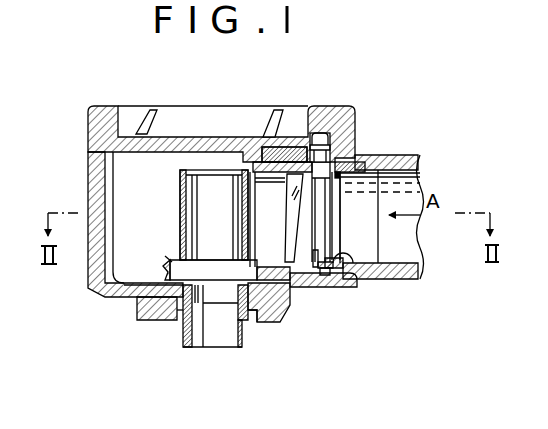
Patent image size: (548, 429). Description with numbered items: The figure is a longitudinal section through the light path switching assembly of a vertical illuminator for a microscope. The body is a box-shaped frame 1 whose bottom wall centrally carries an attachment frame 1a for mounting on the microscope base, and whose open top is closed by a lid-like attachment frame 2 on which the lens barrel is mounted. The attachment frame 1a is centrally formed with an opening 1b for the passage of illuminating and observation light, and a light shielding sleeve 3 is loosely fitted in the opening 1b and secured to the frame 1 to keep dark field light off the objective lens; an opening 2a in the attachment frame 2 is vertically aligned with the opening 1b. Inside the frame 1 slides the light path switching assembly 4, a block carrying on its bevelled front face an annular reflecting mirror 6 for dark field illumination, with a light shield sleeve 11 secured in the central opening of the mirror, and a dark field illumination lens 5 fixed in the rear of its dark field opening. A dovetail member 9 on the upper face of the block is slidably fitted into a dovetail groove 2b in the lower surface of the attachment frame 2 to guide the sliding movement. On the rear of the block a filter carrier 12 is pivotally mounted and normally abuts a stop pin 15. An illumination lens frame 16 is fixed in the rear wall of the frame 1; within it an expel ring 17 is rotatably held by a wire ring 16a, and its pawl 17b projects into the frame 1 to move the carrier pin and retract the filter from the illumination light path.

The box-shaped frame 1 is at (92, 182).
The attachment frame 1a is at (140, 314).
The opening 1b is at (252, 324).
The attachment frame 2 is at (88, 138).
The opening 2a is at (206, 144).
The dovetail groove 2b is at (276, 147).
The light shielding sleeve 3 is at (185, 332).
The light path switching assembly 4 is at (318, 133).
The dark field illumination lens 5 is at (290, 252).
The annular reflecting mirror 6 is at (172, 262).
The dovetail member 9 is at (293, 147).
The light shield sleeve 11 is at (180, 203).
The filter carrier 12 is at (300, 203).
The stop pin 15 is at (318, 270).
The illumination lens frame 16 is at (414, 156).
The wire ring 16a is at (340, 214).
The expel ring 17 is at (370, 158).
The pawl 17b is at (352, 268).